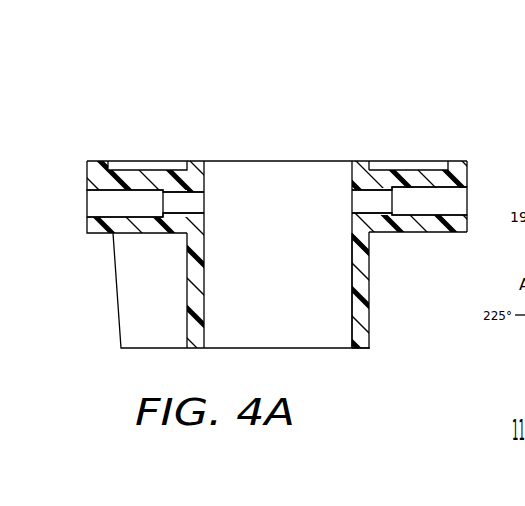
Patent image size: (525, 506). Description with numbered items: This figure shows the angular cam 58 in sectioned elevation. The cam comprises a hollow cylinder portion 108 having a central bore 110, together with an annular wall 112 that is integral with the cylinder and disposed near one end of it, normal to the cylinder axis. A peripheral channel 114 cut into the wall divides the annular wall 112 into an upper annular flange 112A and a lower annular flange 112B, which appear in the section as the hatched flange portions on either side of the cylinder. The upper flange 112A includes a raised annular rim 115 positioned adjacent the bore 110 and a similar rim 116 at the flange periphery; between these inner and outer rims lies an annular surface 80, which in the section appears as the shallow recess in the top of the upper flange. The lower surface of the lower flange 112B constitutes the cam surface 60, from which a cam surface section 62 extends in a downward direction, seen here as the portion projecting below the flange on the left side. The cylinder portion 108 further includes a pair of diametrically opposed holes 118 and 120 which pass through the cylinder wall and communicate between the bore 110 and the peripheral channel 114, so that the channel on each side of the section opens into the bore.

The angular cam 58 is at (378, 263).
The cam surface 60 is at (152, 234).
The cam surface section 62 is at (134, 316).
The annular surface 80 is at (408, 171).
The hollow cylinder portion 108 is at (356, 327).
The bore 110 is at (352, 288).
The annular wall 112 is at (87, 228).
The upper annular flange 112A is at (134, 183).
The lower annular flange 112B is at (120, 234).
The peripheral channel 114 is at (450, 200).
The raised annular rim 115 is at (358, 167).
The rim 116 is at (455, 168).
The hole 118 is at (195, 204).
The hole 120 is at (362, 204).